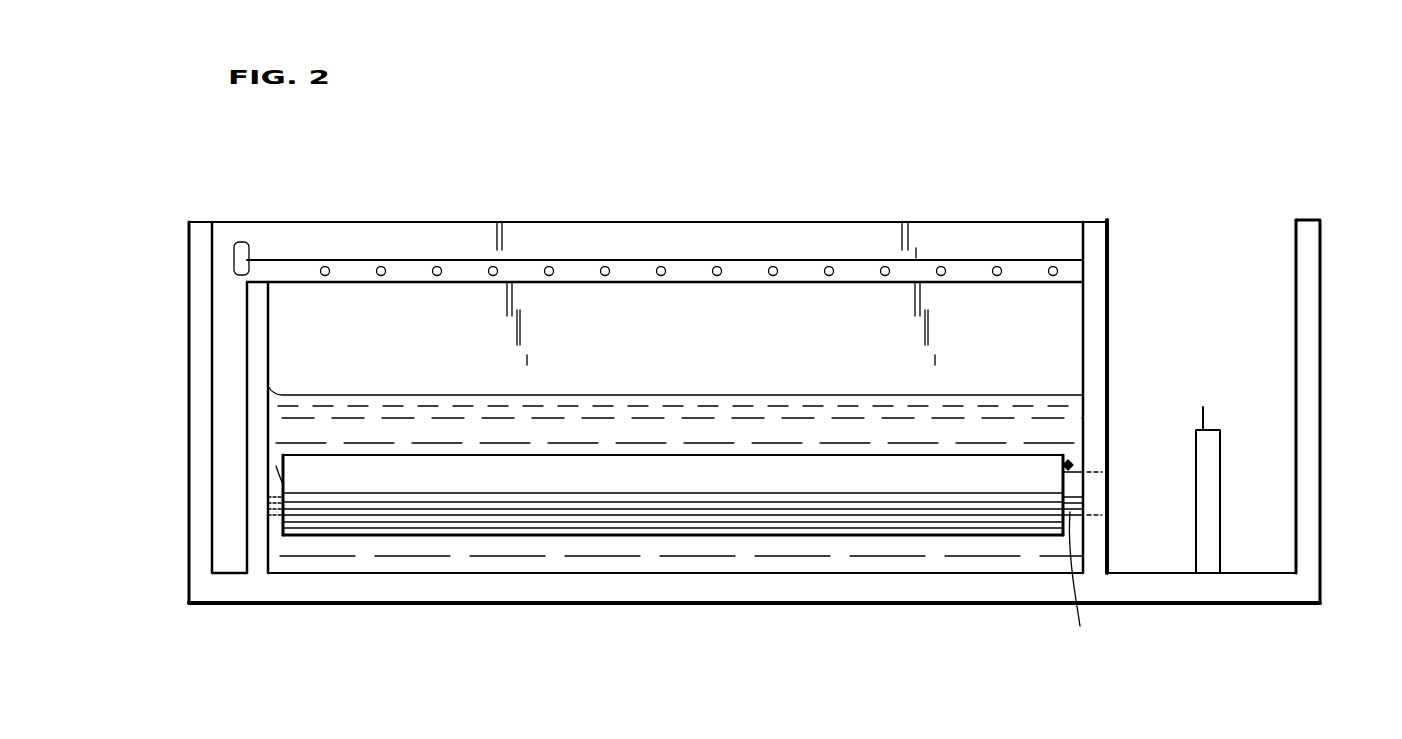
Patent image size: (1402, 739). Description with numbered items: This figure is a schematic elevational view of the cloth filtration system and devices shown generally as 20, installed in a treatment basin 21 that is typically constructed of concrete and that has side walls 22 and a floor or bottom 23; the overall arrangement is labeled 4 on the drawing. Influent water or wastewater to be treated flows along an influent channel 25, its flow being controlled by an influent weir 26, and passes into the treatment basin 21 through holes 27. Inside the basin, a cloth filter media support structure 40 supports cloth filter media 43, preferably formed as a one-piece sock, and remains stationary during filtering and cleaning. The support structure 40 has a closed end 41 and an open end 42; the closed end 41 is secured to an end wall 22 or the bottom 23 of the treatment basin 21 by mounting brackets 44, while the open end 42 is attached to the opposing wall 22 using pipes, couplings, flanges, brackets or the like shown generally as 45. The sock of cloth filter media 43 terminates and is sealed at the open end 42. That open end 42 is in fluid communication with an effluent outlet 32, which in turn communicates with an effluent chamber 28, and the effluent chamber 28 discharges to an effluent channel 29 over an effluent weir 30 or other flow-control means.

The processing apparatus 4 is at (228, 421).
The system and devices 20 is at (928, 632).
The treatment basin 21 is at (540, 420).
The side walls 22 is at (1108, 235).
The floor or bottom 23 is at (553, 590).
The influent channel 25 is at (388, 245).
The influent weir 26 is at (248, 243).
The holes 27 is at (437, 267).
The effluent chamber 28 is at (1148, 550).
The effluent channel 29 is at (1262, 538).
The effluent weir 30 is at (1203, 413).
The effluent outlet 32 is at (1097, 497).
The cloth filter media support structure 40 is at (673, 446).
The closed end 41 is at (268, 523).
The open end 42 is at (1072, 462).
The cloth filter media 43 is at (705, 470).
The mounting brackets 44 is at (280, 475).
The pipes, coupling, flanges, brackets or the like 45 is at (1074, 582).